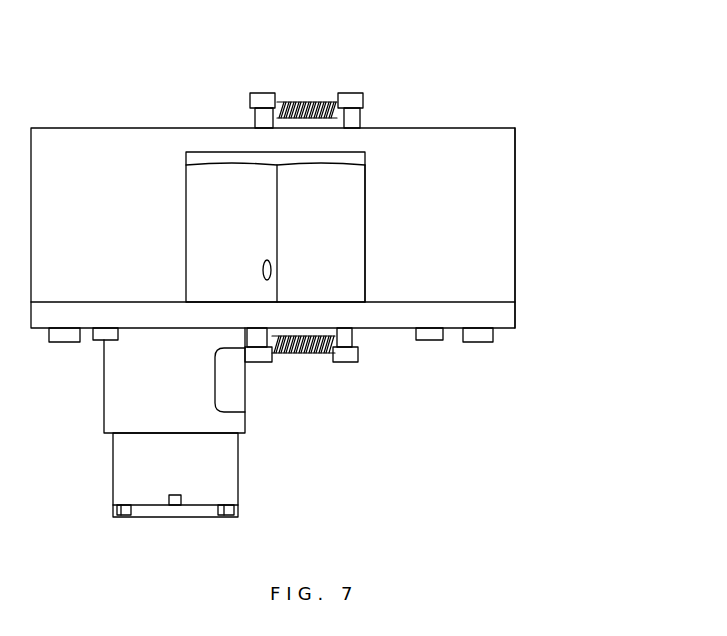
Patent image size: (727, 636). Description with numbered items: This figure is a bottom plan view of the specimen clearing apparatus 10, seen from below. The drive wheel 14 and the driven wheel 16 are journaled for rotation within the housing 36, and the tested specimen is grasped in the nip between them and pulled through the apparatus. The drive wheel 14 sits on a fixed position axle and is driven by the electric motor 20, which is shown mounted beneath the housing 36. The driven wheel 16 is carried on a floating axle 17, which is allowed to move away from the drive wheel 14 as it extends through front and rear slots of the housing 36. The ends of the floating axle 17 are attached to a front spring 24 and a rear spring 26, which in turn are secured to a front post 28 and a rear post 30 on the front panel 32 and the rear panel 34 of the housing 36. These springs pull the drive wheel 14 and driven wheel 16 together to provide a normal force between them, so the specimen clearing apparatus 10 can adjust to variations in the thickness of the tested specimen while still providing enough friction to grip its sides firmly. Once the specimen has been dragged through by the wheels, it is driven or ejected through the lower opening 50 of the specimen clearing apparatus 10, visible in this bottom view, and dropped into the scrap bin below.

The specimen clearing apparatus 10 is at (538, 169).
The drive wheel 14 is at (197, 243).
The driven wheel 16 is at (357, 243).
The floating axle 17 is at (352, 93).
The electric motor 20 is at (125, 468).
The front spring 24 is at (306, 100).
The rear spring 26 is at (300, 356).
The front post 28 is at (265, 93).
The rear post 30 is at (260, 362).
The front panel 32 is at (443, 128).
The rear panel 34 is at (455, 328).
The housing 36 is at (515, 262).
The lower opening 50 is at (216, 150).